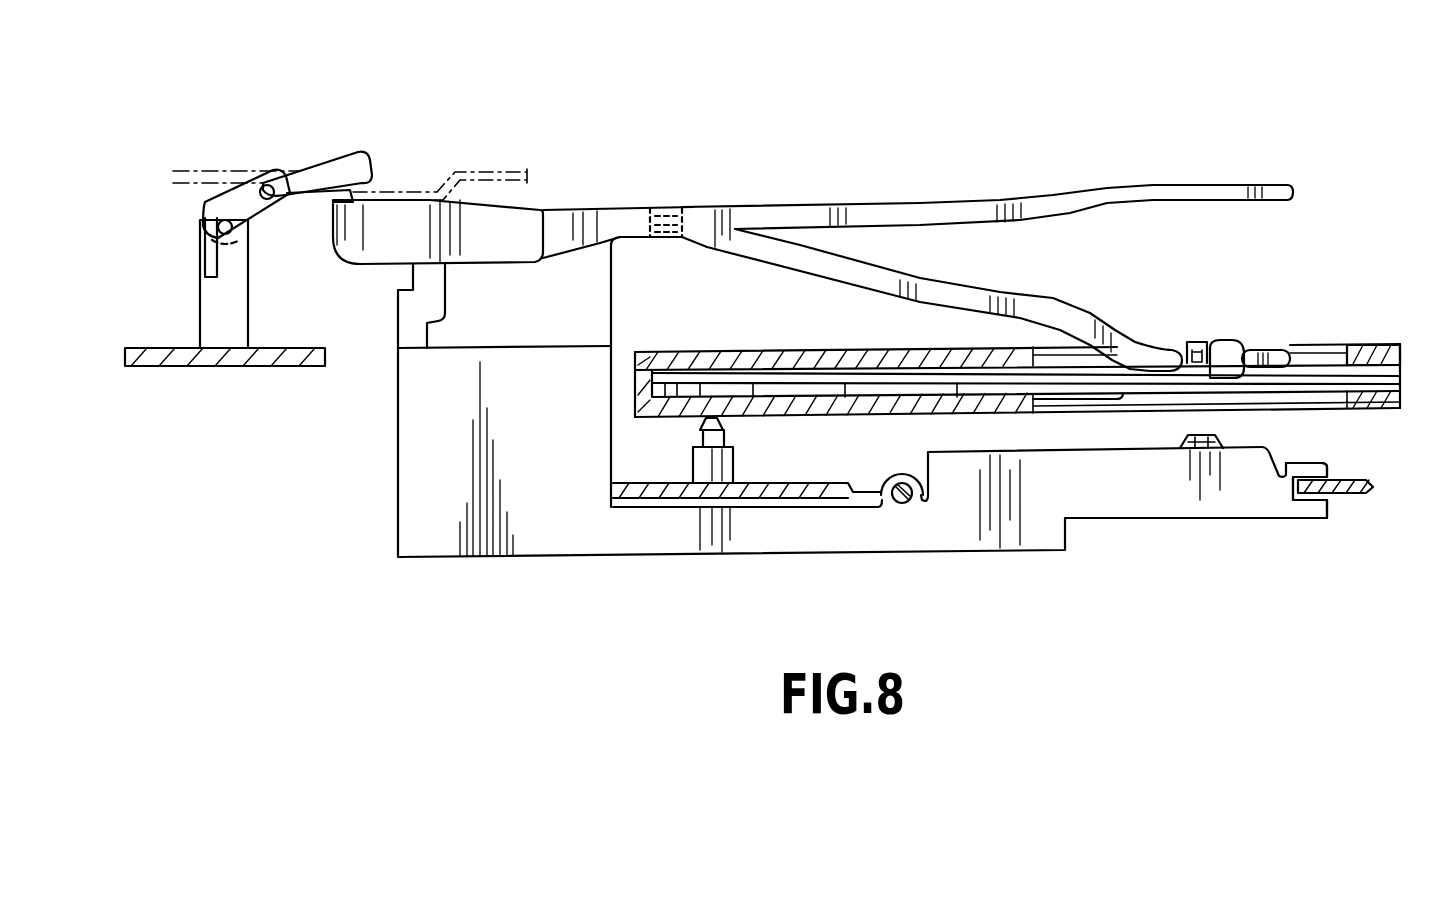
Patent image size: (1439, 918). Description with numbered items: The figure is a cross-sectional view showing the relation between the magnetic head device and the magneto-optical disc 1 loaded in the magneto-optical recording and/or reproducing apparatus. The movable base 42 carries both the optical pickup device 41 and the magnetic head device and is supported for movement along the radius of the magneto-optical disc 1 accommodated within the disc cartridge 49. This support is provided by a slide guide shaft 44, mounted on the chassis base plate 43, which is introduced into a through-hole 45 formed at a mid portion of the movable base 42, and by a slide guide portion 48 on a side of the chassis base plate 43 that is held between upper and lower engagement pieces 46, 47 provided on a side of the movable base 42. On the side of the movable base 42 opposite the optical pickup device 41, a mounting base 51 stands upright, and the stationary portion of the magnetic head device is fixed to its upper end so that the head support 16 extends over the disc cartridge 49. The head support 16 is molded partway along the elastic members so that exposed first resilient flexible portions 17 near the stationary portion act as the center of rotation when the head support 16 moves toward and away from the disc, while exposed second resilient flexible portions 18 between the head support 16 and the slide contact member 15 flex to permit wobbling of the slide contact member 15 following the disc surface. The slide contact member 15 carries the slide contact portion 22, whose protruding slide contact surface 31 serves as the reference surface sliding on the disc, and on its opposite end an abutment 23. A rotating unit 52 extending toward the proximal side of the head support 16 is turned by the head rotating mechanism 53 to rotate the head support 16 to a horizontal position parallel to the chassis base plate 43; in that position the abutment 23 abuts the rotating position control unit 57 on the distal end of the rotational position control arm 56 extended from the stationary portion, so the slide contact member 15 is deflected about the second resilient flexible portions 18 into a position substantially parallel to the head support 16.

The magneto-optical disc 1 is at (1400, 410).
The slide contact member 15 is at (1230, 350).
The head support 16 is at (963, 300).
The first resilient flexible portions 17 is at (666, 212).
The second resilient flexible portions 18 is at (1195, 345).
The slide contact portion 22 is at (1117, 352).
The abutment 23 is at (1281, 350).
The slide contact surface 31 is at (1100, 400).
The optical pickup device 41 is at (1222, 438).
The movable base 42 is at (780, 522).
The chassis base plate 43 is at (1370, 495).
The slide guide shaft 44 is at (900, 504).
The through-hole 45 is at (910, 508).
The upper engagement piece 46 is at (1325, 462).
The lower engagement piece 47 is at (1302, 505).
The slide guide portion 48 is at (1313, 502).
The disc cartridge 49 is at (1370, 344).
The mounting base 51 is at (407, 313).
The rotating unit 52 is at (360, 238).
The head rotating mechanism 53 is at (288, 160).
The rotational position control arm 56 is at (917, 214).
The rotating position control unit 57 is at (1282, 190).